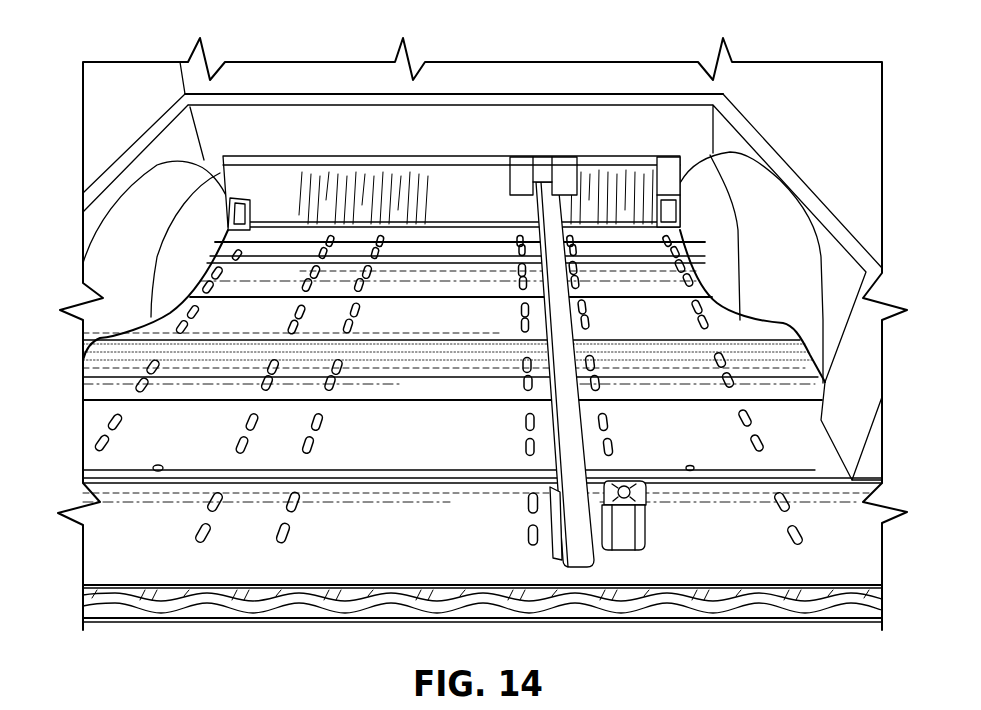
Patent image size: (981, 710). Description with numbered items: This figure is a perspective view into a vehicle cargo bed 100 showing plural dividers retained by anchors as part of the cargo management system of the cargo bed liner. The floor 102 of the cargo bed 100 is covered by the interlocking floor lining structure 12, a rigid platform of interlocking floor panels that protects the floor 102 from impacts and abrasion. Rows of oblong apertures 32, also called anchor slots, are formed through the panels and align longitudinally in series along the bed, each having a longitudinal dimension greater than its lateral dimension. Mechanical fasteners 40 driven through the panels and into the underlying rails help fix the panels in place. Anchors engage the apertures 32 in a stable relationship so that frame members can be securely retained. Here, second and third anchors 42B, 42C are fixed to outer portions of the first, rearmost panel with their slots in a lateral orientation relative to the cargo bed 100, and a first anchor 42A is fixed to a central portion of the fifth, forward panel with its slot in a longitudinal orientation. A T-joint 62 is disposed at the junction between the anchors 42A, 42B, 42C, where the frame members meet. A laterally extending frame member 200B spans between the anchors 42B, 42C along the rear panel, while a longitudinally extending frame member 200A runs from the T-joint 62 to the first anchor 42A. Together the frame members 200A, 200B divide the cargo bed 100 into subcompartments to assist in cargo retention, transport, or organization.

The cargo bed 100 is at (850, 152).
The interlocking floor lining structure 12 is at (80, 476).
The apertures 32 is at (203, 530).
The mechanical fasteners 40 is at (160, 465).
The floor 102 is at (268, 598).
The frame member 200B is at (358, 156).
The frame member 200A is at (583, 568).
The T-joint 62 is at (527, 156).
The first anchor 42A is at (647, 540).
The second anchor 42B is at (228, 205).
The third anchor 42C is at (664, 196).